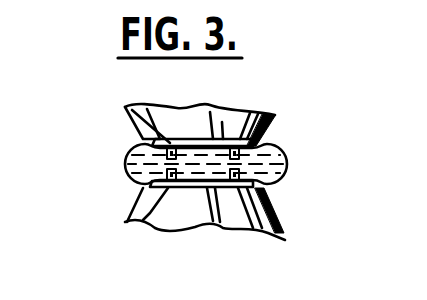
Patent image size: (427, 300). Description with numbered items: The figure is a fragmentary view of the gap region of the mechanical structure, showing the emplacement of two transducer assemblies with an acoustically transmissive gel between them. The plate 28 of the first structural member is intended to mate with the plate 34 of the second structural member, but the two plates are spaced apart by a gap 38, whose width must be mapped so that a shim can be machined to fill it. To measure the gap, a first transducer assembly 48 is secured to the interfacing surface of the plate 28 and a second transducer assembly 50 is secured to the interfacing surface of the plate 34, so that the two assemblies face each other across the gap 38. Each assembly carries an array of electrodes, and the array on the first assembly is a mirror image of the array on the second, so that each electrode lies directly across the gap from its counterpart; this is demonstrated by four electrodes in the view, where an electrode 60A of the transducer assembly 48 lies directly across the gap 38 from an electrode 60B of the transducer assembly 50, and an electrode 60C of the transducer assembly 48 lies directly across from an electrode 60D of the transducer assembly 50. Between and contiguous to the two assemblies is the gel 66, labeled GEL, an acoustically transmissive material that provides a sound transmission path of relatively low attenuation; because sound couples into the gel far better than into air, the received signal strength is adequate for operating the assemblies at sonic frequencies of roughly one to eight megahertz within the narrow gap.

The plate 28 is at (180, 106).
The plate 34 is at (186, 230).
The gap 38 is at (150, 188).
The first transducer assembly 48 is at (214, 106).
The second transducer assembly 50 is at (223, 203).
The electrode 60A is at (128, 105).
The electrode 60B is at (145, 220).
The electrode 60C is at (275, 115).
The electrode 60D is at (285, 240).
The gel 66 is at (290, 160).
The gel GEL is at (126, 162).